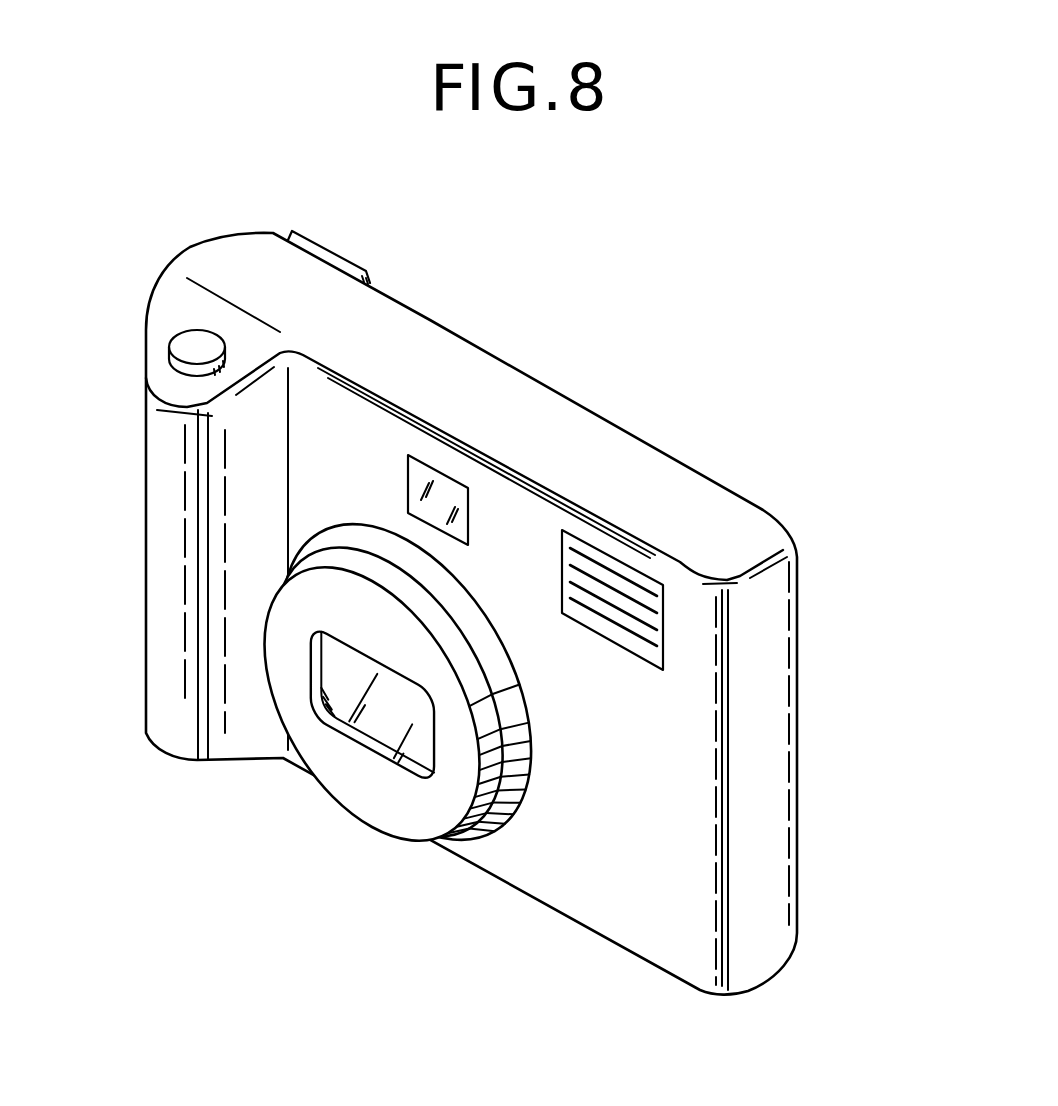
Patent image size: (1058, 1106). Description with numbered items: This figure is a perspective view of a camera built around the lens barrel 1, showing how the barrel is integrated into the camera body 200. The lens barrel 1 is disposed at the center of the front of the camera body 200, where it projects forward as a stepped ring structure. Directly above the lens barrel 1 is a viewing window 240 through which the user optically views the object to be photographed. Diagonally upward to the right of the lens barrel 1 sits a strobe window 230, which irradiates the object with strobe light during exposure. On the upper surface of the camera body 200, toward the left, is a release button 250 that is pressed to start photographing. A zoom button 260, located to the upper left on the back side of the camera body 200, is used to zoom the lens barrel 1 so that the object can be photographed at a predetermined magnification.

The lens barrel 1 is at (405, 820).
The camera body 200 is at (762, 865).
The strobe window 230 is at (633, 620).
The viewing window 240 is at (451, 485).
The release button 250 is at (188, 341).
The zoom button 260 is at (330, 250).